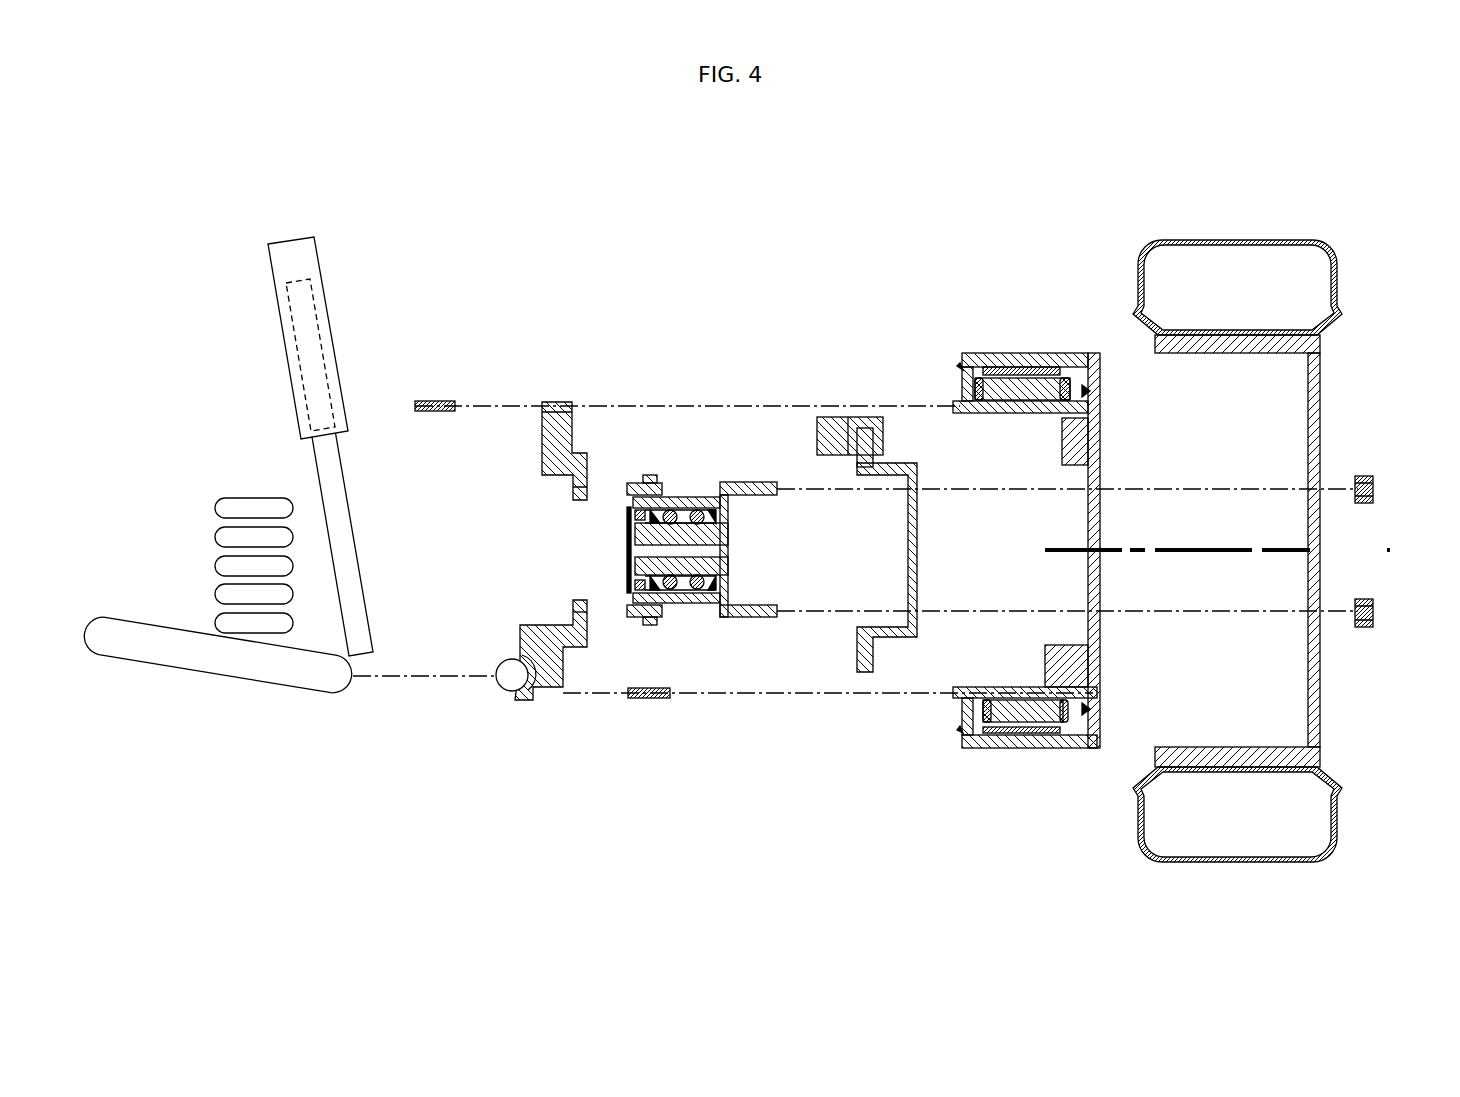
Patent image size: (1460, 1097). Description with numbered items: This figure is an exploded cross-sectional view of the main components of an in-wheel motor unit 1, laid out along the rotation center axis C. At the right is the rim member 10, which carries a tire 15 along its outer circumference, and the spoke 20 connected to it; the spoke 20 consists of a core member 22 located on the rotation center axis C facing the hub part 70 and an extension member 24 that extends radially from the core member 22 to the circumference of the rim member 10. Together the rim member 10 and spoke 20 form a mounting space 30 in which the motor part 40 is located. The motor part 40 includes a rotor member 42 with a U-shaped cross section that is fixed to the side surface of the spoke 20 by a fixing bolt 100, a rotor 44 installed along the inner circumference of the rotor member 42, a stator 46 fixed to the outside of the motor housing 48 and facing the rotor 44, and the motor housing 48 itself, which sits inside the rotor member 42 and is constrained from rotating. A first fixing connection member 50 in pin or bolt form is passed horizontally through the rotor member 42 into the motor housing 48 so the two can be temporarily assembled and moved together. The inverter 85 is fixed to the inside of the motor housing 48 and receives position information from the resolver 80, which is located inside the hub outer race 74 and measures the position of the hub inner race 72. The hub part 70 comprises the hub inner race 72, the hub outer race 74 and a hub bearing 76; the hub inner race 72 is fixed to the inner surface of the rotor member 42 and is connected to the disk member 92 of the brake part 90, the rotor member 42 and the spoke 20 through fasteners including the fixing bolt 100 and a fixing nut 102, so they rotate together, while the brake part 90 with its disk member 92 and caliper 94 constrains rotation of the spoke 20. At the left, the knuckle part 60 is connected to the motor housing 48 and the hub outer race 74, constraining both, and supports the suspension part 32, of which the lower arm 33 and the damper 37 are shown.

The in-wheel motor unit 1 is at (1227, 194).
The rim member 10 is at (1217, 340).
The tire 15 is at (1262, 243).
The spoke 20 is at (1336, 733).
The core member 22 is at (1318, 525).
The extension member 24 is at (1318, 708).
The mounting space 30 is at (1180, 695).
The suspension part 32 is at (203, 703).
The lower arm 33 is at (133, 640).
The damper 37 is at (254, 328).
The motor part 40 is at (998, 279).
The rotor member 42 is at (1058, 353).
The rotor 44 is at (1015, 367).
The stator 46 is at (988, 353).
The motor housing 48 is at (962, 686).
The first fixing connection member 50 is at (1097, 407).
The knuckle part 60 is at (523, 700).
The hub part 70 is at (668, 452).
The hub inner race 72 is at (728, 527).
The hub outer race 74 is at (680, 497).
The hub bearing 76 is at (713, 603).
The resolver 80 is at (627, 592).
The inverter 85 is at (1063, 663).
The brake part 90 is at (912, 318).
The disk member 92 is at (900, 462).
The caliper 94 is at (858, 416).
The fixing bolt 100 is at (763, 617).
The fixing nut 102 is at (1372, 625).
The rotation center axis C is at (1388, 553).